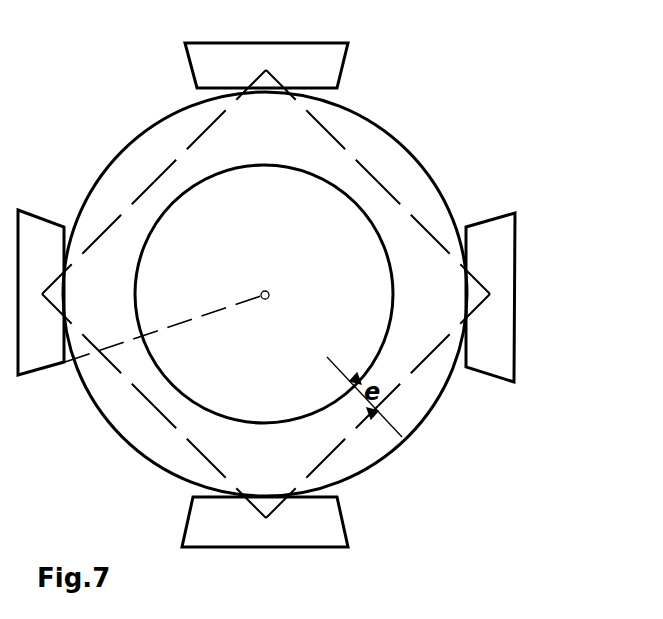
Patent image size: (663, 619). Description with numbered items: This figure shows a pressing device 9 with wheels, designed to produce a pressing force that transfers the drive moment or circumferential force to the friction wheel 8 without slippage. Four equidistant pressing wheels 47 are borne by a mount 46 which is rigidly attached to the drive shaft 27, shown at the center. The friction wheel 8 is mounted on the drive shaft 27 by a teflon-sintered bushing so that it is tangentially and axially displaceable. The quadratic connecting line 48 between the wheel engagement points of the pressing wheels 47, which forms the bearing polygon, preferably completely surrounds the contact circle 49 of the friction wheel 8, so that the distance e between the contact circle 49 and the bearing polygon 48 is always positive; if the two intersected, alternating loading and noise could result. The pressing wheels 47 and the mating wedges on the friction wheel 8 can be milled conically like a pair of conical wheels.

The mount 46 is at (420, 162).
The pressing wheels 47 is at (328, 63).
The quadratic connecting line 48 is at (168, 165).
The contact circle 49 is at (157, 228).
The drive shaft 27 is at (269, 298).
The friction wheel 8 is at (247, 352).
The pressing device 9 is at (515, 562).